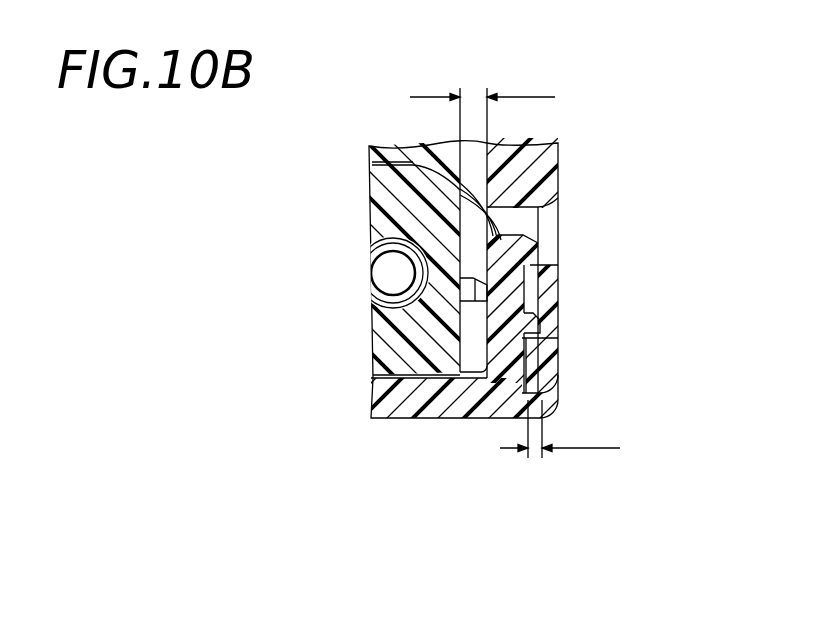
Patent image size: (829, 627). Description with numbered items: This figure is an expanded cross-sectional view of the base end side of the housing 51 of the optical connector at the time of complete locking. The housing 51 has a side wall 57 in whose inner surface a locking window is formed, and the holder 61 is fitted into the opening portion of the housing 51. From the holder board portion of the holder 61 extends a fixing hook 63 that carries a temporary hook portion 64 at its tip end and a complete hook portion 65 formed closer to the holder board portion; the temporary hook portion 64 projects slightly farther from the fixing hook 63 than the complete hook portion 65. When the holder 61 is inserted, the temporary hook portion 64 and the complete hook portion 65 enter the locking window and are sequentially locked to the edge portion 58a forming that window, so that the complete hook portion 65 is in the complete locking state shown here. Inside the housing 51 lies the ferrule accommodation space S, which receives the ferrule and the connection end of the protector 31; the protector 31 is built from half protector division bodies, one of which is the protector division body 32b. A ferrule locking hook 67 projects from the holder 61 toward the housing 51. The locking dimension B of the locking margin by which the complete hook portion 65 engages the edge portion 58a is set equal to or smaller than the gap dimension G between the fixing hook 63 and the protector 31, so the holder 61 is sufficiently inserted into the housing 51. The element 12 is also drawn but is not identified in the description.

The housing 51 is at (565, 162).
The side wall 57 is at (560, 182).
The temporary hook portion 64 is at (542, 252).
The complete hook portion 65 is at (543, 333).
The edge portion 58a is at (548, 366).
The rolling element 12 is at (392, 275).
The holder 61 is at (371, 420).
The protector division body 32b is at (385, 400).
The protector 31 is at (417, 390).
The ferrule locking hook 67 is at (477, 354).
The fixing hook 63 is at (502, 337).
The ferrule accommodation space S is at (451, 375).
The gap dimension G is at (482, 108).
The locking dimension B is at (560, 429).